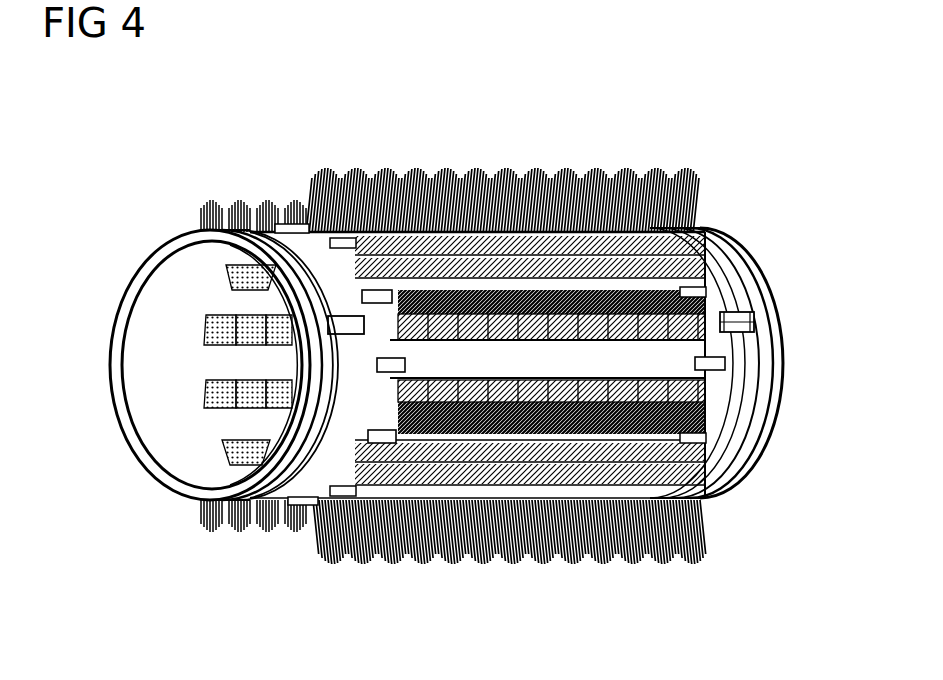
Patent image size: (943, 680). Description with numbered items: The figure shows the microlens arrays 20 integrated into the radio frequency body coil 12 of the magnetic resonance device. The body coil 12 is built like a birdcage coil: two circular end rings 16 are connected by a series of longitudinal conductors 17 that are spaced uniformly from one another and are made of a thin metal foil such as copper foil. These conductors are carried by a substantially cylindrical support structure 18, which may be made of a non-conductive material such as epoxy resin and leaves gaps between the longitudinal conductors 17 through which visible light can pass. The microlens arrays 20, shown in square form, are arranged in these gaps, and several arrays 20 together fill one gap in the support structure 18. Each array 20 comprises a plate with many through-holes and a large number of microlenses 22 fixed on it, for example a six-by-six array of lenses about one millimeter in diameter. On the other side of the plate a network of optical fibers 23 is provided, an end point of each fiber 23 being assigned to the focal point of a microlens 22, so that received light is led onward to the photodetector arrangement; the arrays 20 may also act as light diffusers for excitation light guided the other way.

The radio frequency body coil 12 is at (207, 144).
The end ring 16 is at (352, 347).
The longitudinal conductor 17 is at (582, 373).
The support structure 18 is at (776, 343).
The microlens array 20 is at (243, 373).
The microlens 22 is at (222, 316).
The optical fiber 23 is at (740, 322).